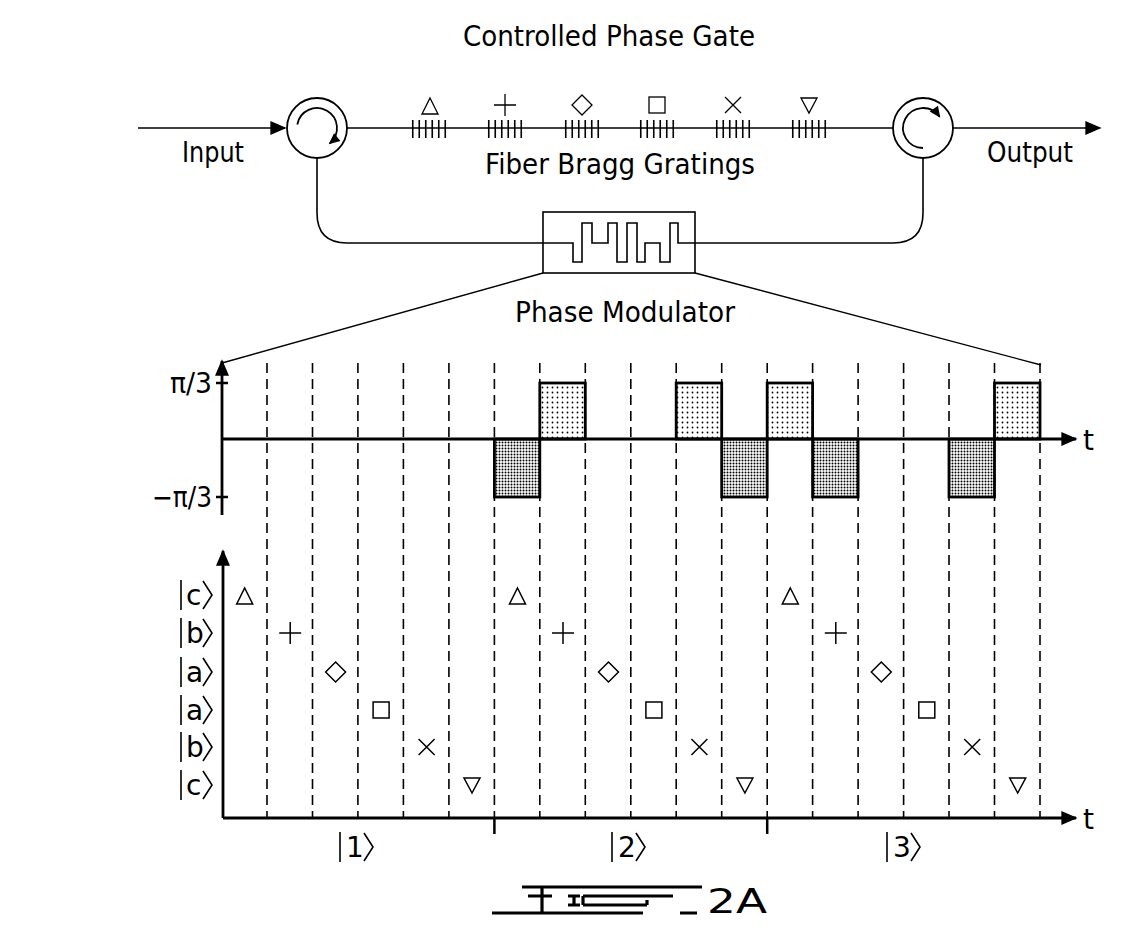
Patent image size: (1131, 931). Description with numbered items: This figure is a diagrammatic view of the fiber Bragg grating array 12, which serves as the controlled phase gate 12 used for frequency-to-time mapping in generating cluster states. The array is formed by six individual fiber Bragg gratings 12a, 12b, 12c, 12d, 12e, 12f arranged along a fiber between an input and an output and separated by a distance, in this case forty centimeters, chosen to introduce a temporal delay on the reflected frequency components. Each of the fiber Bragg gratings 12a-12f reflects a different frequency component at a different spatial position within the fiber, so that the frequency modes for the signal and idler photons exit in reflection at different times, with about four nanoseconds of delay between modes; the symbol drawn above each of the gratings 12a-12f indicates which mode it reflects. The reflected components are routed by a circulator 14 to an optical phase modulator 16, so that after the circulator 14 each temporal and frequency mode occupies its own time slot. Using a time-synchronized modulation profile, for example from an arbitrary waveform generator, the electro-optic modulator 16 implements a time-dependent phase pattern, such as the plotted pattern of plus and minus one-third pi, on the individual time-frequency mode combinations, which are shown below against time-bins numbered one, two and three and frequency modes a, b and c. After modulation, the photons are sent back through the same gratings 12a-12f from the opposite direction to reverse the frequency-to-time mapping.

The fiber Bragg grating array 12 is at (821, 73).
The fiber Bragg grating 12a is at (422, 100).
The fiber Bragg grating 12b is at (496, 100).
The fiber Bragg grating 12c is at (573, 97).
The fiber Bragg grating 12d is at (649, 105).
The fiber Bragg grating 12e is at (726, 100).
The fiber Bragg grating 12f is at (801, 104).
The circulator 14 is at (695, 258).
The optical phase modulator 16 is at (943, 150).